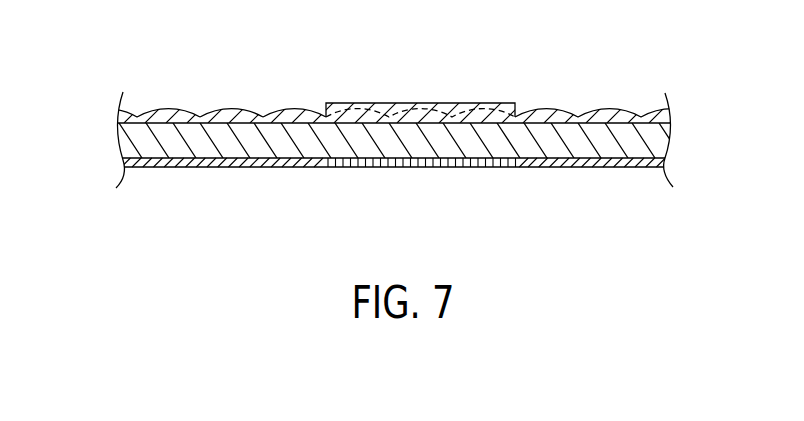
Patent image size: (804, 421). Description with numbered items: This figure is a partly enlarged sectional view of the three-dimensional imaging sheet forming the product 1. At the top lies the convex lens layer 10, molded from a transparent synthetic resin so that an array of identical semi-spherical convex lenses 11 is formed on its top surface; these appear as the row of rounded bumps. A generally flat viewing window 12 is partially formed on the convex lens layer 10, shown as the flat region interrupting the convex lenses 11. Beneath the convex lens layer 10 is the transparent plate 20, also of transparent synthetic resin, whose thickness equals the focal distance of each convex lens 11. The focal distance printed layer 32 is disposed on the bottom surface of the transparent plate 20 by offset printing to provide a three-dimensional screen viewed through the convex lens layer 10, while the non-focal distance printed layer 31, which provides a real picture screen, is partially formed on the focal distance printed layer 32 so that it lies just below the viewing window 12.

The product 1 is at (667, 78).
The convex lens layer 10 is at (597, 105).
The convex lens 11 is at (233, 113).
The viewing window 12 is at (453, 113).
The transparent plate 20 is at (127, 147).
The non-focal distance printed layer 31 is at (430, 167).
The focal distance printed layer 32 is at (270, 167).